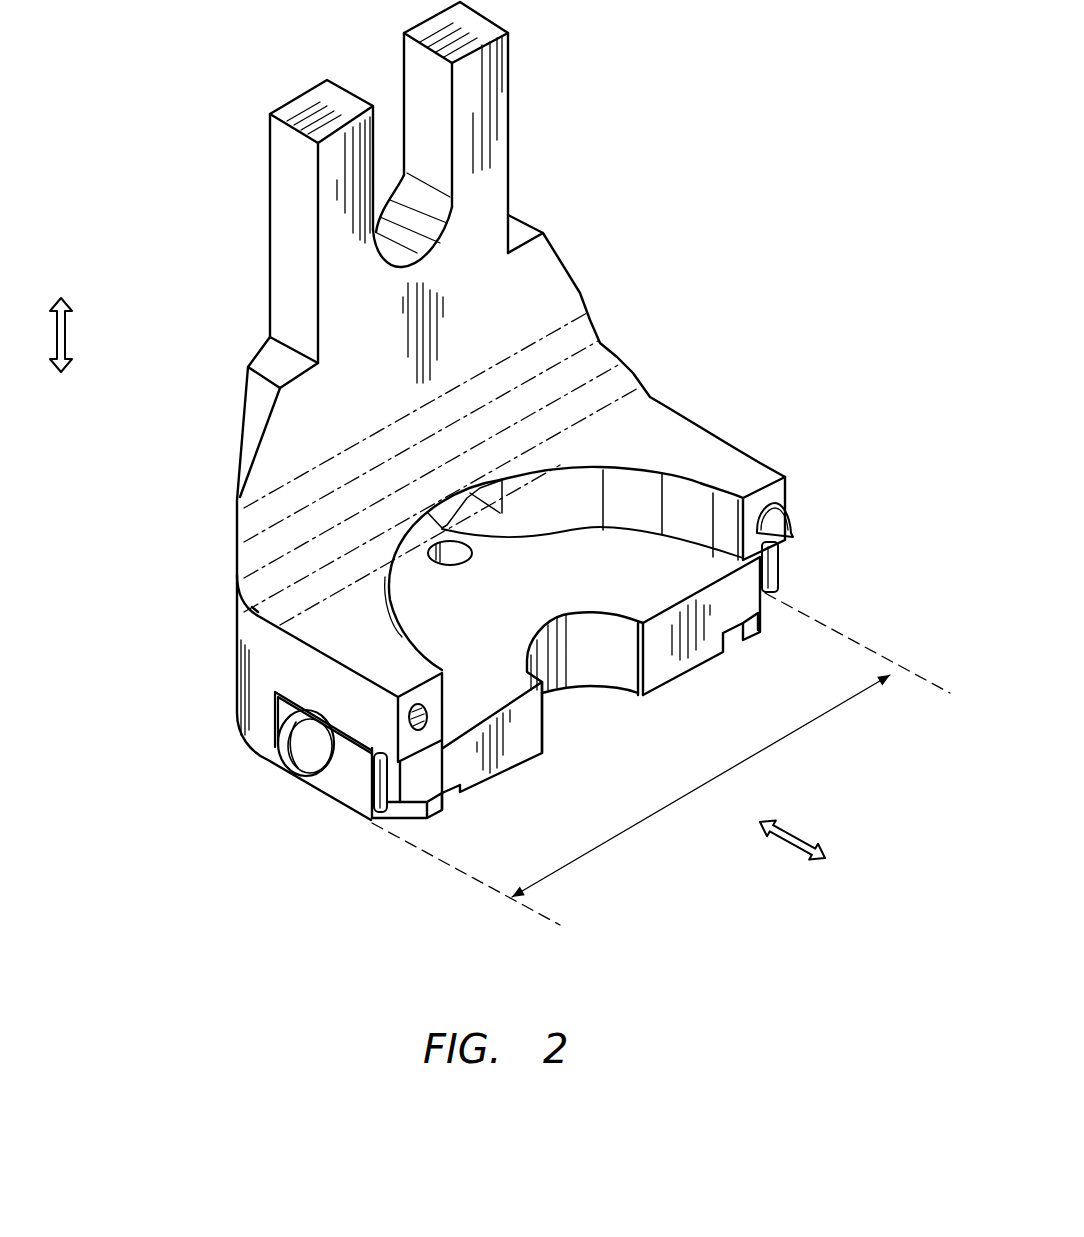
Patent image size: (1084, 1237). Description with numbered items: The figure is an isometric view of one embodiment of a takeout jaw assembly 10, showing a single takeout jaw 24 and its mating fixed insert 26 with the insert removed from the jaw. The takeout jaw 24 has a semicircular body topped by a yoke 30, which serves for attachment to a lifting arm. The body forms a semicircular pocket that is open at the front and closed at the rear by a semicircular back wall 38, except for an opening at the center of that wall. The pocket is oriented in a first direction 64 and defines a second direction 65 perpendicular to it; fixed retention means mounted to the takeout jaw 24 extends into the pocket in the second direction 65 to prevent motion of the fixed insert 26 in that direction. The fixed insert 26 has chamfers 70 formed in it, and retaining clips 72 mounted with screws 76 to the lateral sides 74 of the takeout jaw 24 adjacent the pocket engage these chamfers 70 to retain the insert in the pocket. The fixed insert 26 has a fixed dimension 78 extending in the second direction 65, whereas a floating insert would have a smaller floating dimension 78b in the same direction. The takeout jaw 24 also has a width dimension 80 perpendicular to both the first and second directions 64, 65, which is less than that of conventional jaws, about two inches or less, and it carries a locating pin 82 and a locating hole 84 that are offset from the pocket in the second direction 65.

The takeout jaw assembly 10 is at (796, 151).
The takeout jaw 24 is at (555, 297).
The fixed insert 26 is at (703, 678).
The yoke 30 is at (288, 145).
The semicircular back wall 38 is at (682, 490).
The first direction 64 is at (785, 843).
The second direction 65 is at (70, 338).
The chamfers 70 is at (410, 787).
The retaining clips 72 is at (353, 785).
The sides 74 is at (257, 732).
The screws 76 is at (282, 750).
The fixed dimension 78 is at (510, 695).
The floating dimension 78b is at (588, 610).
The width dimension 80 is at (762, 748).
The locating pin 82 is at (783, 520).
The locating hole 84 is at (422, 727).